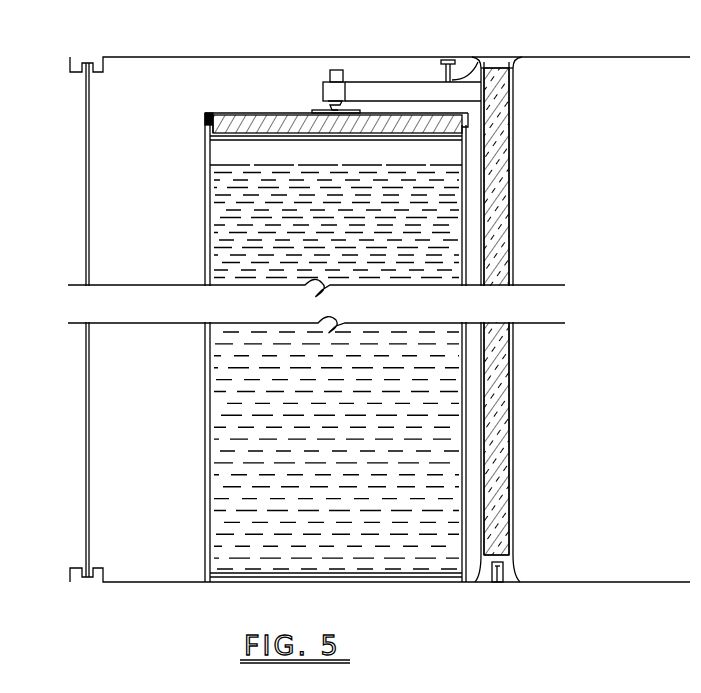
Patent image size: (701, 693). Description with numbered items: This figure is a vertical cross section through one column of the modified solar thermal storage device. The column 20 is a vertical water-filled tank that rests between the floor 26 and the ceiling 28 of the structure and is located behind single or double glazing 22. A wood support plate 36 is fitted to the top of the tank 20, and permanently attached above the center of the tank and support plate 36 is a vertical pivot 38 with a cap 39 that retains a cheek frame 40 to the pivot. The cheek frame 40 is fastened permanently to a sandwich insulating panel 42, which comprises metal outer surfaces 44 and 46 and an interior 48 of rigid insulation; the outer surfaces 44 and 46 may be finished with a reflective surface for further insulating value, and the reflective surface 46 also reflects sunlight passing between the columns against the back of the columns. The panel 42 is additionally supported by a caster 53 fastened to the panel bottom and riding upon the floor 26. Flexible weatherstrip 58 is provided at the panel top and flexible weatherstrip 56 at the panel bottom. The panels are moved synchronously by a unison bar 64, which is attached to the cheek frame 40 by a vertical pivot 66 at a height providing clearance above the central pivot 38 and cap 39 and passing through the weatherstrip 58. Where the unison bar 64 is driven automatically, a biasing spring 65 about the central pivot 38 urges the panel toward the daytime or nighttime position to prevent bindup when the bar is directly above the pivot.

The column 20 is at (205, 220).
The glazing 22 is at (85, 204).
The floor 26 is at (600, 582).
The ceiling 28 is at (604, 60).
The wood support plate 36 is at (215, 122).
The vertical pivot 38 is at (318, 110).
The cap 39 is at (337, 70).
The cheek frame 40 is at (392, 83).
The sandwich insulating panel 42 is at (514, 370).
The metal outer surface 44 is at (514, 185).
The metal outer surface 46 is at (481, 162).
The interior of rigid insulation 48 is at (500, 232).
The caster 53 is at (495, 585).
The flexible weatherstrip 56 is at (520, 578).
The flexible weatherstrip 58 is at (519, 66).
The unison bar 64 is at (455, 62).
The biasing spring 65 is at (348, 100).
The vertical pivot 66 is at (482, 68).